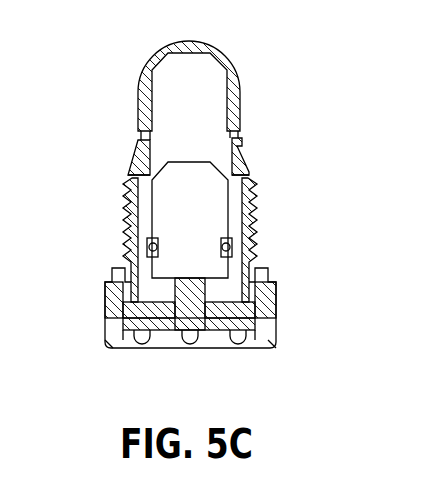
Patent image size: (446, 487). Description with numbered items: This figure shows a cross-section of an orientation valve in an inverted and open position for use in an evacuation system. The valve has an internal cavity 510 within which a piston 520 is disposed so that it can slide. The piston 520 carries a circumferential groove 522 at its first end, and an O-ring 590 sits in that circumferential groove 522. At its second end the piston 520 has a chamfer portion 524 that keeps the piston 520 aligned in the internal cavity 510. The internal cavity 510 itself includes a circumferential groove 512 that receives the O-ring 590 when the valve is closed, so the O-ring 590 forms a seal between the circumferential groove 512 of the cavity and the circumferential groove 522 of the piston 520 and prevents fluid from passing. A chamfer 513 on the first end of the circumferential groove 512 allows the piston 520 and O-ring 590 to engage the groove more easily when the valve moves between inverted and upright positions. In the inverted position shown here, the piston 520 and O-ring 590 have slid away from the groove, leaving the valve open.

The internal cavity 510 is at (207, 97).
The circumferential groove 512 is at (247, 166).
The chamfer 513 is at (147, 163).
The piston 520 is at (207, 202).
The circumferential groove 522 is at (150, 252).
The chamfer portion 524 is at (140, 175).
The O-ring 590 is at (232, 246).